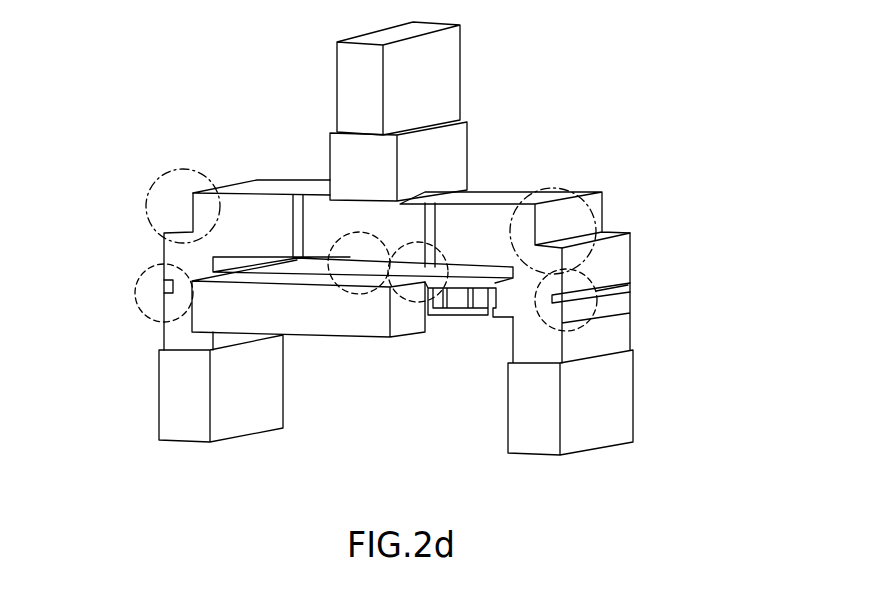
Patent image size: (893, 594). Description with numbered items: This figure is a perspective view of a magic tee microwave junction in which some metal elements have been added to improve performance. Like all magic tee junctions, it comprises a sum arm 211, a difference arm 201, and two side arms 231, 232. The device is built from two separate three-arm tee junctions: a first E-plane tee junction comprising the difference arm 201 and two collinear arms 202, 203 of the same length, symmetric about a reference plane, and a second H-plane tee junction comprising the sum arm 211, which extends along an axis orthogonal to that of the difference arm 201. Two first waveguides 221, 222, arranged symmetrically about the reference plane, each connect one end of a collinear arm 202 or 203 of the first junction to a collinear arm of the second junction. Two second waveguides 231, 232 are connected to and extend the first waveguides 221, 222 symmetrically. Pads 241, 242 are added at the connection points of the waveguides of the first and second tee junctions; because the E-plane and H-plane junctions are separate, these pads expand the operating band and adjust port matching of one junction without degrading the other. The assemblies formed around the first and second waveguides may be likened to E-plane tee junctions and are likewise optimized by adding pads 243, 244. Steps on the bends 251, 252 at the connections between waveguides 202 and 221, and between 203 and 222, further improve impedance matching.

The difference arm 201 is at (468, 131).
The collinear arm 202 is at (260, 178).
The collinear arm 203 is at (574, 186).
The sum arm 211 is at (383, 340).
The first waveguide 221 is at (163, 254).
The first waveguide 222 is at (632, 262).
The second waveguide 231 is at (163, 348).
The second waveguide 232 is at (636, 313).
The pad 241 is at (335, 242).
The pad 242 is at (425, 243).
The pad 243 is at (143, 278).
The pad 244 is at (632, 293).
The step on the bend 251 is at (165, 176).
The step on the bend 252 is at (600, 211).